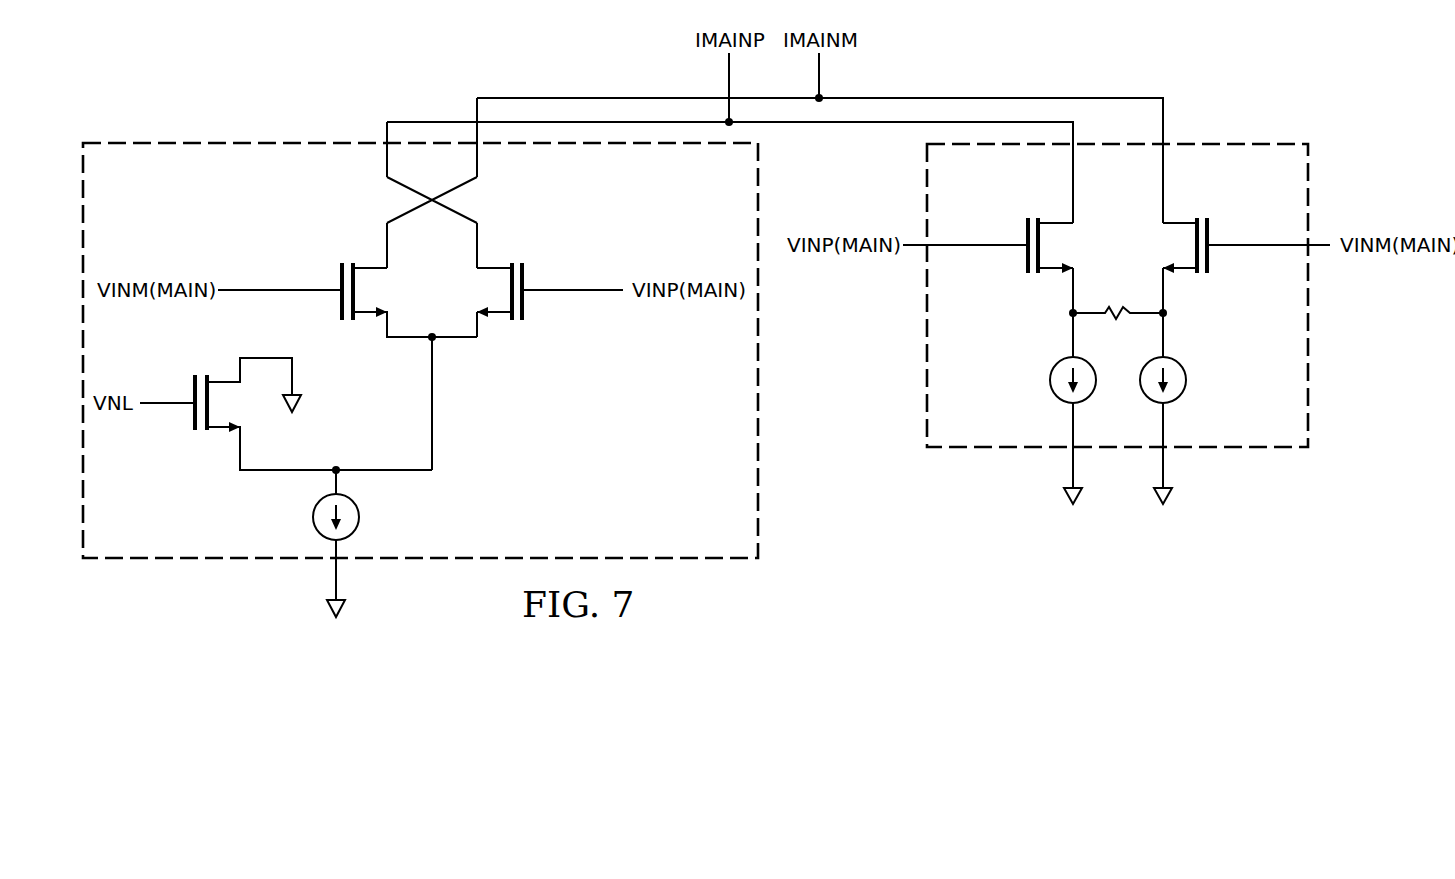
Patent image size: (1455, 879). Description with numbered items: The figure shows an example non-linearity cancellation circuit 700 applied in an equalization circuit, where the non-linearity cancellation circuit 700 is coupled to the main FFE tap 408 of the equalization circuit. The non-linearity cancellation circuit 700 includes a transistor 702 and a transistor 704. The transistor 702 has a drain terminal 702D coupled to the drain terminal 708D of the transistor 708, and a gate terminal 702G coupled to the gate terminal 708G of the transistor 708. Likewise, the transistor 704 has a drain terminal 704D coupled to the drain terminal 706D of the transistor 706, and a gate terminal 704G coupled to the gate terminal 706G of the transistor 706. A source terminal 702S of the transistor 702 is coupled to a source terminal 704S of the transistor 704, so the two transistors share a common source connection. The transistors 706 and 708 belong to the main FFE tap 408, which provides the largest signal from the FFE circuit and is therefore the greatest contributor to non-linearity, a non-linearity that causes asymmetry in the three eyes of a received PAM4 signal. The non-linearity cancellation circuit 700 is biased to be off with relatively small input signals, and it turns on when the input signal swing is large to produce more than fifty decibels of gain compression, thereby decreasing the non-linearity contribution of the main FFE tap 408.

The non-linearity cancellation circuit 700 is at (324, 139).
The main FFE tap 408 is at (1229, 138).
The transistor 702 is at (332, 280).
The drain terminal 702D is at (368, 265).
The gate terminal 702G is at (330, 292).
The source terminal 702S is at (362, 322).
The transistor 704 is at (530, 279).
The drain terminal 704D is at (495, 265).
The gate terminal 704G is at (533, 293).
The source terminal 704S is at (500, 317).
The transistor 706 is at (1017, 233).
The drain terminal 706D is at (1055, 220).
The gate terminal 706G is at (1018, 248).
The transistor 708 is at (1216, 232).
The drain terminal 708D is at (1180, 220).
The gate terminal 708G is at (1213, 248).